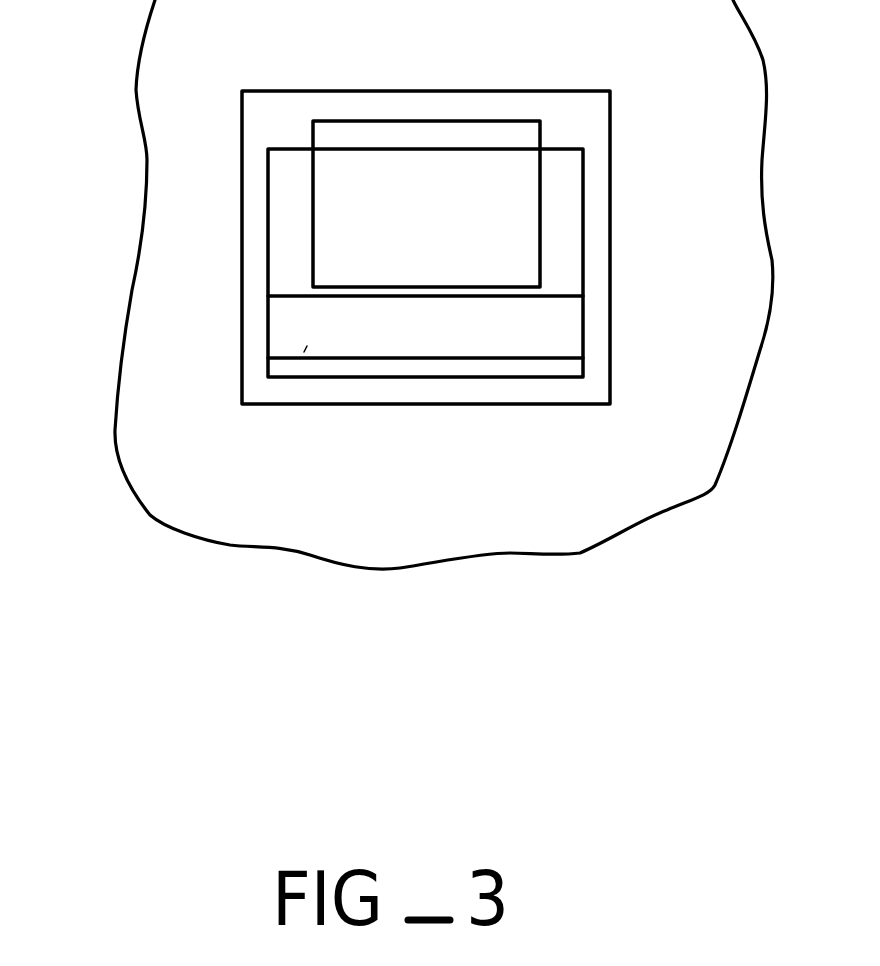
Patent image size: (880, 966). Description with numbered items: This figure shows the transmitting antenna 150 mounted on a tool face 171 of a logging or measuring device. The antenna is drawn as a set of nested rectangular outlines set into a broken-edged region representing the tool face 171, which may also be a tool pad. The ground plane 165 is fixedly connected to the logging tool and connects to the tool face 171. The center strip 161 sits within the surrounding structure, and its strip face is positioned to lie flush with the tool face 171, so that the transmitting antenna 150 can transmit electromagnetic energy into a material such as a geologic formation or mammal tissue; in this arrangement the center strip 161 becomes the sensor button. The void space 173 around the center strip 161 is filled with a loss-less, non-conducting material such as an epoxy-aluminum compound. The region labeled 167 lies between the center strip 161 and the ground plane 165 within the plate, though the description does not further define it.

The transmitting antenna 150 is at (241, 258).
The center strip 161 is at (465, 162).
The ground plane 165 is at (559, 367).
The bonding region of plate 167 is at (335, 326).
The tool face 171 is at (708, 136).
The void space 173 is at (292, 107).